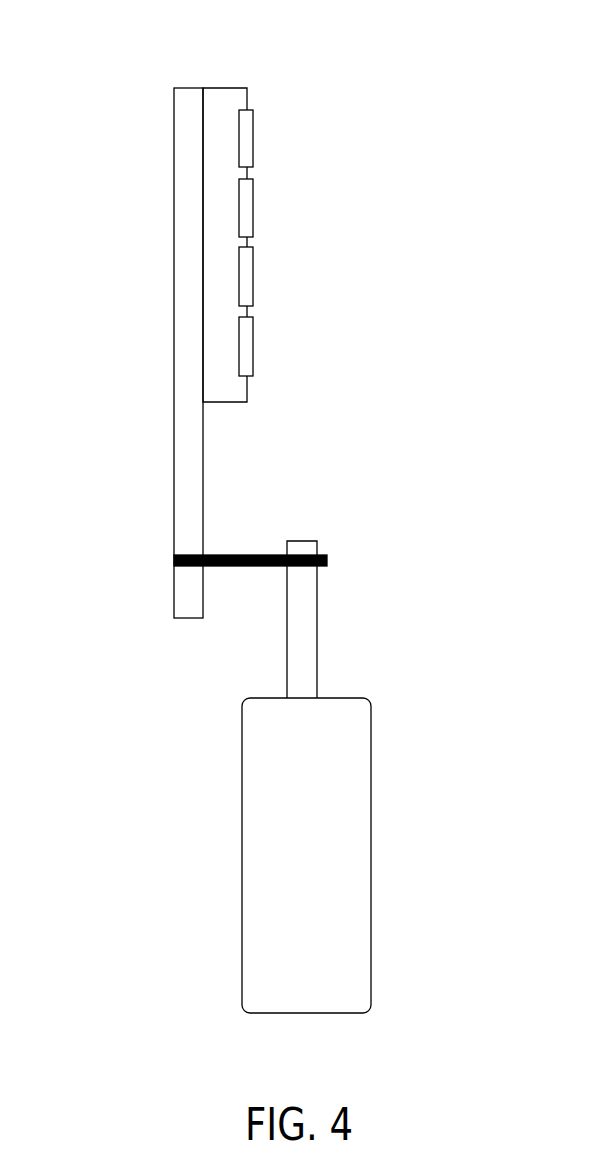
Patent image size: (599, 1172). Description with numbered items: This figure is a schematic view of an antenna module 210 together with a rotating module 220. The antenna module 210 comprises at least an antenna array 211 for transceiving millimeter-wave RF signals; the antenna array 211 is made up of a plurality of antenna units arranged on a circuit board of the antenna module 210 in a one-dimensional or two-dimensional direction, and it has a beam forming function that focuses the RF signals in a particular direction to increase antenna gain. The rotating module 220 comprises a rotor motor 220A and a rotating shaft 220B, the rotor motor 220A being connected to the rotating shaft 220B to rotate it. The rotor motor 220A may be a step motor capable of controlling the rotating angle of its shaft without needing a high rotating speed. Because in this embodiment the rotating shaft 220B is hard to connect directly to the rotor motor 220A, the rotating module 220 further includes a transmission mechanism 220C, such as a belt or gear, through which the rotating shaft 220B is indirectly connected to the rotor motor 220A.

The antenna module 210 is at (223, 107).
The antenna array 211 is at (255, 143).
The rotating module 220 is at (321, 735).
The rotor motor 220A is at (318, 778).
The rotating shaft 220B is at (174, 462).
The transmission mechanism 220C is at (264, 553).